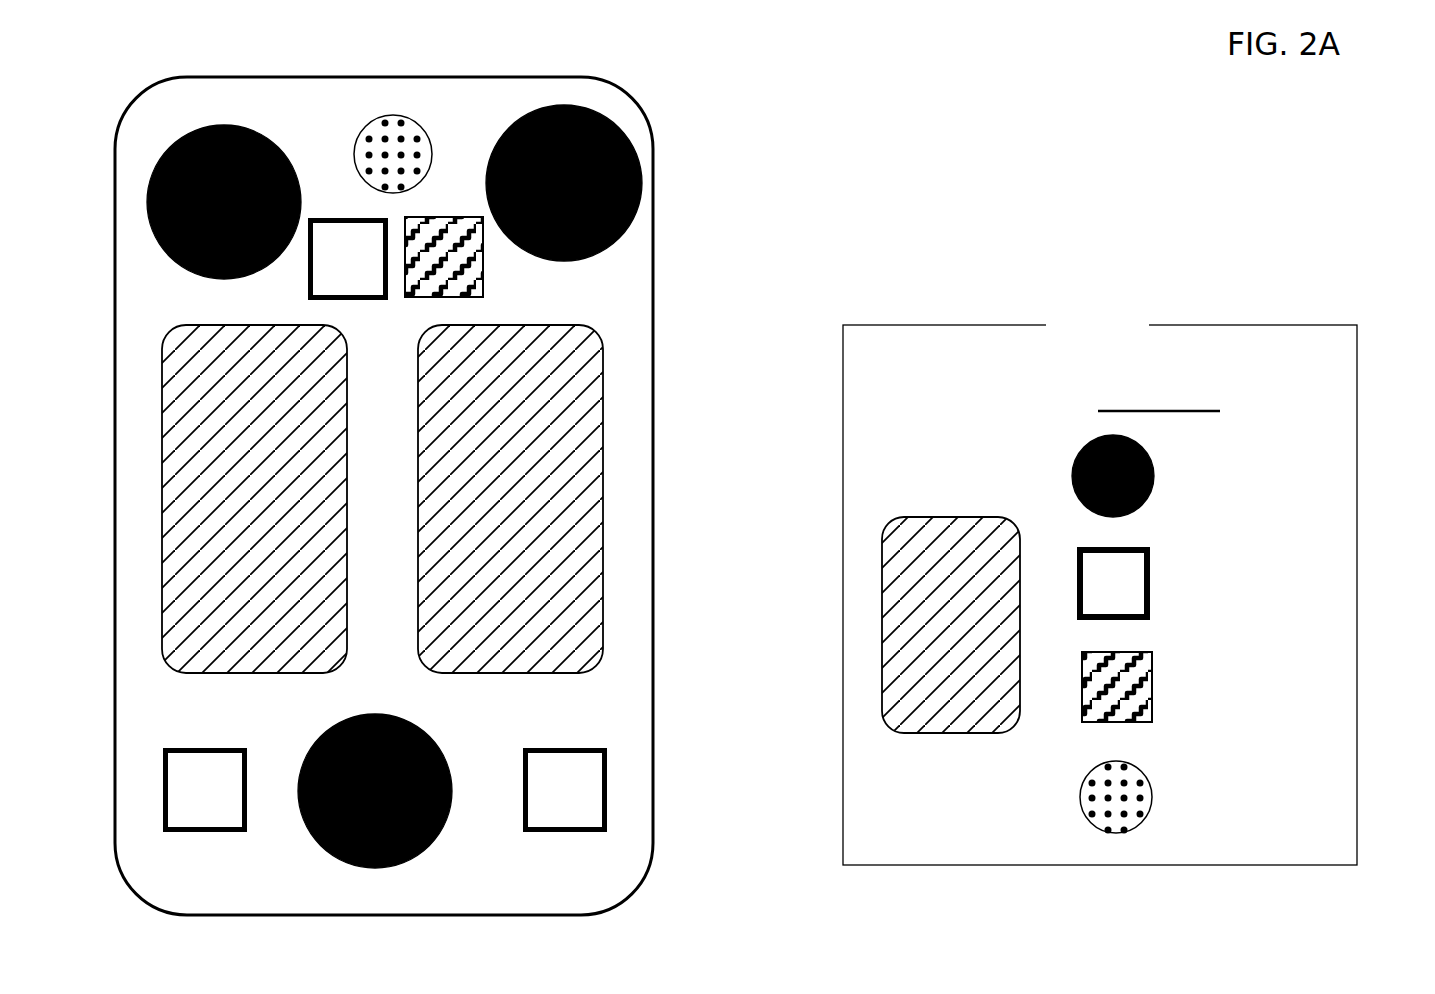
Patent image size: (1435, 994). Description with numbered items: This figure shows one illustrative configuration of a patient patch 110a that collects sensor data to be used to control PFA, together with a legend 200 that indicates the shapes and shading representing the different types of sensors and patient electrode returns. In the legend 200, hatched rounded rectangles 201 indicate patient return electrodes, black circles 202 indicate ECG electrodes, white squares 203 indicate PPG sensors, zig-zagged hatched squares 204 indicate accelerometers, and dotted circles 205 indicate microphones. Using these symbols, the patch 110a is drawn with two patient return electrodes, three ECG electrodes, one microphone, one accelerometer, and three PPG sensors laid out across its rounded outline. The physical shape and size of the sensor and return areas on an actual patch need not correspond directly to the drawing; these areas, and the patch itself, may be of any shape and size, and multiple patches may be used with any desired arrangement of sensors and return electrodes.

The patch 110a is at (657, 200).
The legend 200 is at (1258, 325).
The hatched rounded rectangles 201 is at (881, 606).
The black circles 202 is at (1086, 443).
The white squares 203 is at (1078, 545).
The zig-zagged hatched squares 204 is at (1083, 654).
The dotted circles 205 is at (1094, 770).